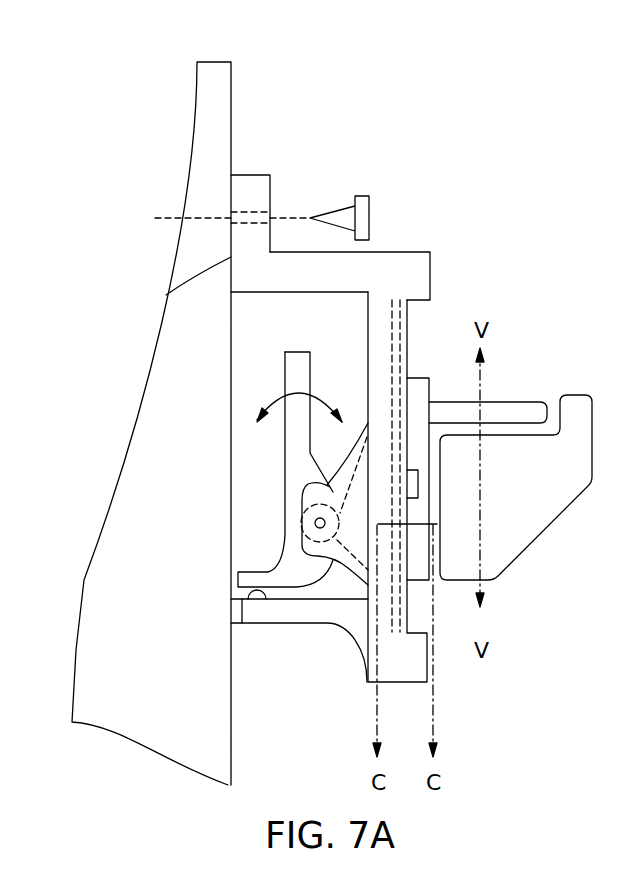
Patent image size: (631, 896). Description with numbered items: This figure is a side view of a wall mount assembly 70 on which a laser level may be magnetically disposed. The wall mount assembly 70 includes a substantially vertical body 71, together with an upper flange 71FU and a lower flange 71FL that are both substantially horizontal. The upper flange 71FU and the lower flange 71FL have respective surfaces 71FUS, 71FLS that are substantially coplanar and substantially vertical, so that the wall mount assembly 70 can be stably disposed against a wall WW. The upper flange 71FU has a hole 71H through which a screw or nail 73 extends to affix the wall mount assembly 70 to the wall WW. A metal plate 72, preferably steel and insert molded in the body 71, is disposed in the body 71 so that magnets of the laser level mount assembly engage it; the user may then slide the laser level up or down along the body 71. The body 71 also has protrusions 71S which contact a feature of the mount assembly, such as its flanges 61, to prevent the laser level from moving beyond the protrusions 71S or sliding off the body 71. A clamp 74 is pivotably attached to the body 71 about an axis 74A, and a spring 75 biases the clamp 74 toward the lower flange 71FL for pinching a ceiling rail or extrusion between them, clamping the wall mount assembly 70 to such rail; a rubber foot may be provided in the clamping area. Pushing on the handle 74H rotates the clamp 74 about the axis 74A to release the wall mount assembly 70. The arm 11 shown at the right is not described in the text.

The wall WW is at (217, 73).
The wall mount assembly 70 is at (292, 435).
The body 71 is at (380, 265).
The hole 71H is at (255, 213).
The upper flange 71FU is at (363, 265).
The surface of upper flange 71FUS is at (166, 295).
The protrusions 71S is at (413, 665).
The lower flange 71FL is at (272, 620).
The surface of lower flange 71FLS is at (233, 612).
The metal plate 72 is at (403, 328).
The screw or nail 73 is at (362, 195).
The flanges of mount assembly 61 is at (418, 395).
The arm 11 is at (527, 527).
The clamp 74 is at (284, 527).
The axis 74A is at (315, 522).
The handle 74H is at (285, 373).
The spring 75 is at (345, 512).